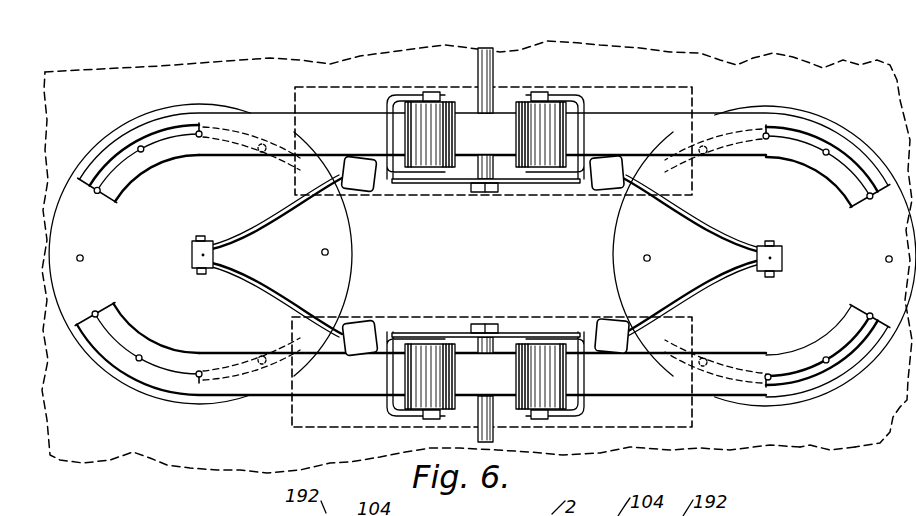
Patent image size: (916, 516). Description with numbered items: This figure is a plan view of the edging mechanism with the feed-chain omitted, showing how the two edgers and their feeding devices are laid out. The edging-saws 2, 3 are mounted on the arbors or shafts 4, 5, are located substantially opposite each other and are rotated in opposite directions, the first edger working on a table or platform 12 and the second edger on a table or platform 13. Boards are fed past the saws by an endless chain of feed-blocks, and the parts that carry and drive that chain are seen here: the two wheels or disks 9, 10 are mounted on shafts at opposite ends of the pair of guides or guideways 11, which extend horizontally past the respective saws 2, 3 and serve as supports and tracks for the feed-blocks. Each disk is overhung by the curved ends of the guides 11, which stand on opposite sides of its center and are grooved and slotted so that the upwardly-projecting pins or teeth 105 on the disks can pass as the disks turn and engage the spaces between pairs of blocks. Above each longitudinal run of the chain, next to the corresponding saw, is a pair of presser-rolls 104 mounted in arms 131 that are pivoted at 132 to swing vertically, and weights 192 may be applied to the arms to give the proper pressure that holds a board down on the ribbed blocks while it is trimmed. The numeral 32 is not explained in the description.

The edging-saw 2 is at (515, 330).
The edging-saw 3 is at (533, 187).
The arbor or shaft 4 is at (476, 414).
The arbor or shaft 5 is at (495, 66).
The disk 9 is at (356, 233).
The disk 10 is at (617, 229).
The guide or guideway 11 is at (305, 118).
The table or platform of the first edger 12 is at (832, 452).
The table or platform of the second edger 13 is at (116, 68).
The right pivot block 32 is at (774, 243).
The presser-roll 104 is at (410, 124).
The pin or tooth 105 is at (144, 153).
The arm 131 is at (298, 211).
The pivot 132 is at (190, 241).
The weight 192 is at (344, 164).